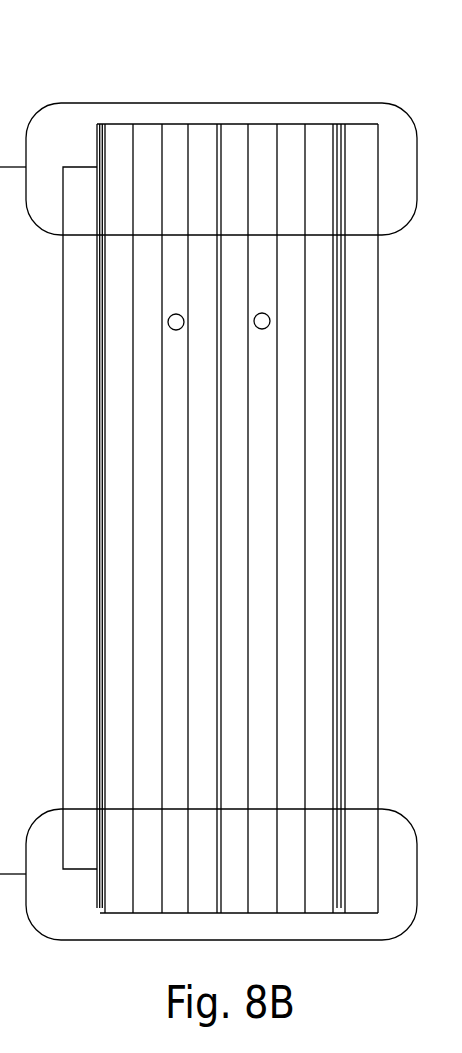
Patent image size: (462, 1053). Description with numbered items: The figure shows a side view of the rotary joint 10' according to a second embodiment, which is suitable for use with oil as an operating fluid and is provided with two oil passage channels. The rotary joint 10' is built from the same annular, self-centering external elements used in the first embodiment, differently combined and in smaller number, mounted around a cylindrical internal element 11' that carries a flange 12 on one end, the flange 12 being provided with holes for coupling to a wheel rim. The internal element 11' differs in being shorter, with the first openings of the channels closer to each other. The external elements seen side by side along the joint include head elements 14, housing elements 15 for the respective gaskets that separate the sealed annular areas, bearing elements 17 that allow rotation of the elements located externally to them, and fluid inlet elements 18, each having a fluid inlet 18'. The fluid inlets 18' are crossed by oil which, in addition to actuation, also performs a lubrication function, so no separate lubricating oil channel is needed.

The rotary joint 10' is at (417, 223).
The internal element 11' is at (52, 518).
The flange 12 is at (365, 133).
The head elements 14 is at (100, 135).
The housing elements 15 is at (118, 133).
The bearing elements 17 is at (147, 133).
The fluid inlet elements 18 is at (235, 77).
The fluid inlet 18' is at (219, 355).